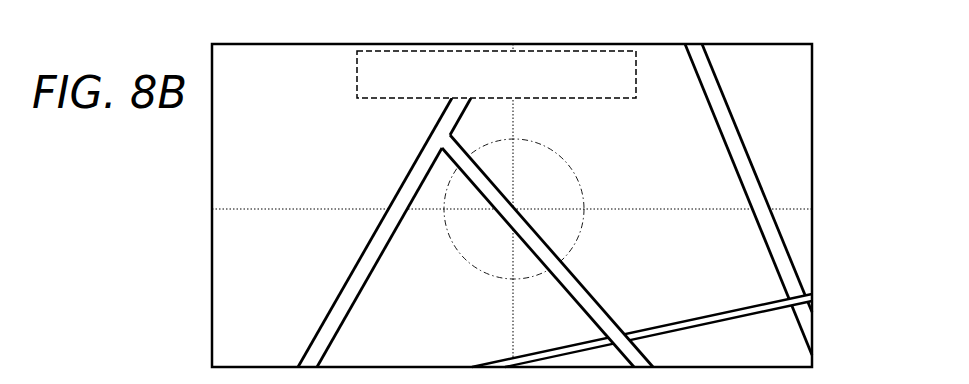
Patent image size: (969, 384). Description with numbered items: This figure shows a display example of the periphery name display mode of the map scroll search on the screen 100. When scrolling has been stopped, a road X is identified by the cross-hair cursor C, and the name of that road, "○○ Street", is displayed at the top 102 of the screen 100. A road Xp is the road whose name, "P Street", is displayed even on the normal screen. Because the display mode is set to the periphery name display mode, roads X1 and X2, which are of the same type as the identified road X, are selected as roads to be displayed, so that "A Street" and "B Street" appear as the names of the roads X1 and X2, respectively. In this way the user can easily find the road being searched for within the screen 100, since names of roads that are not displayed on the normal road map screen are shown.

The screen 100 is at (813, 158).
The top of the screen 102 is at (357, 72).
The road X1 is at (342, 300).
The road X2 is at (724, 322).
The road Xp is at (734, 160).
The road X is at (572, 277).
The cross-hair cursor C is at (581, 184).